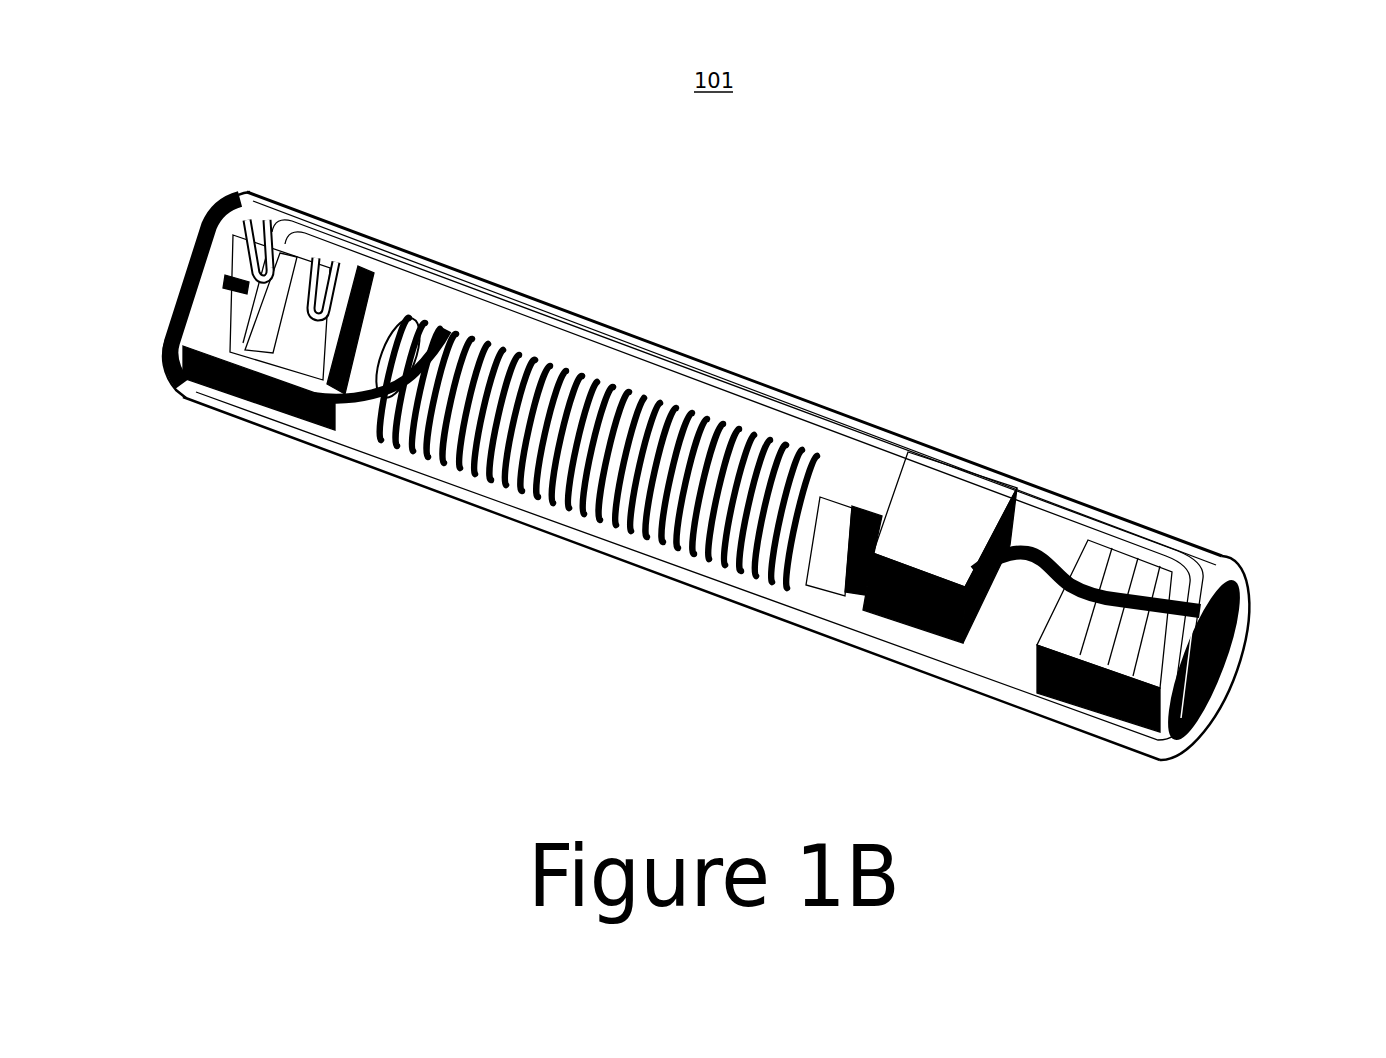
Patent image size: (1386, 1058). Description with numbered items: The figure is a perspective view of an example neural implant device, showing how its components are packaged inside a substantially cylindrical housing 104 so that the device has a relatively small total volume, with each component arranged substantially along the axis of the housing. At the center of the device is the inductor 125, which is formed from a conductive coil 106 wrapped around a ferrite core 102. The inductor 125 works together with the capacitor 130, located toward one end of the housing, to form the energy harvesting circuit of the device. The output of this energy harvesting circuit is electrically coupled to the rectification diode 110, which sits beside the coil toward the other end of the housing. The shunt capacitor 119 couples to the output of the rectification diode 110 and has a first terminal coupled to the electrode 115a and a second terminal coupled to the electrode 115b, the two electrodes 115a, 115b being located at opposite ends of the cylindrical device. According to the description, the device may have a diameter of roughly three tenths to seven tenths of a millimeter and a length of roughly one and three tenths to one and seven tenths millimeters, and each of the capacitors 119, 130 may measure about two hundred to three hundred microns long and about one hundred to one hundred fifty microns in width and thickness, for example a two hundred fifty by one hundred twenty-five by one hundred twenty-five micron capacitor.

The ferrite core 102 is at (827, 550).
The housing tube 104 is at (357, 448).
The conductive coil 106 is at (572, 453).
The rectification diode 110 is at (958, 492).
The shunt capacitor 119 is at (1107, 568).
The inductor 125 is at (643, 556).
The capacitor 130 is at (263, 400).
The electrode 115a is at (1203, 663).
The electrode 115b is at (188, 290).